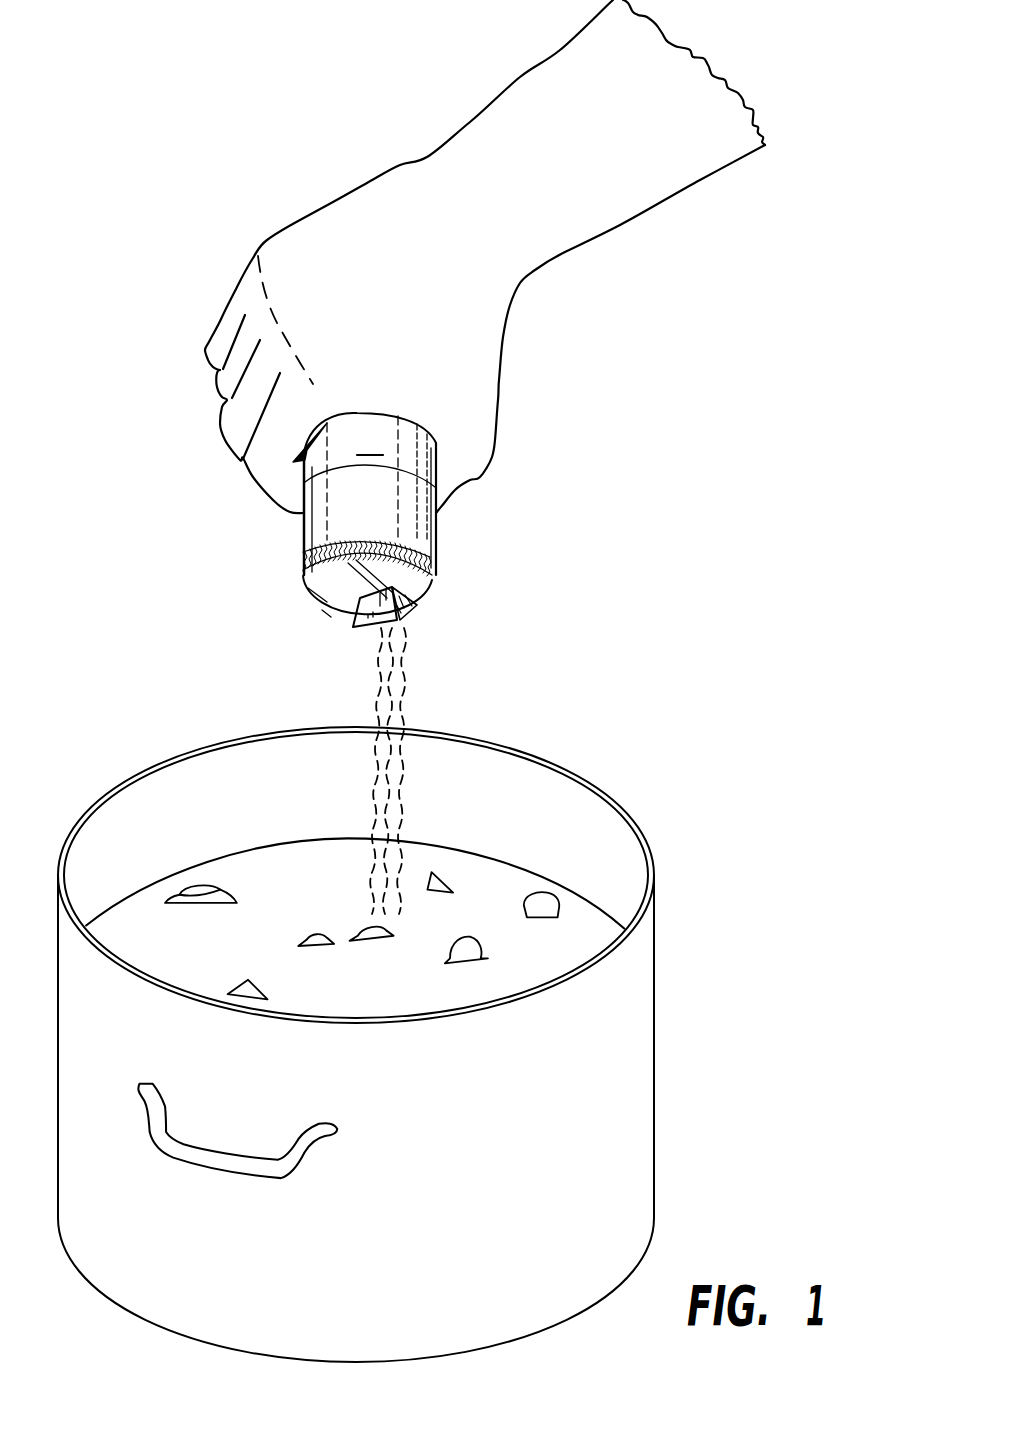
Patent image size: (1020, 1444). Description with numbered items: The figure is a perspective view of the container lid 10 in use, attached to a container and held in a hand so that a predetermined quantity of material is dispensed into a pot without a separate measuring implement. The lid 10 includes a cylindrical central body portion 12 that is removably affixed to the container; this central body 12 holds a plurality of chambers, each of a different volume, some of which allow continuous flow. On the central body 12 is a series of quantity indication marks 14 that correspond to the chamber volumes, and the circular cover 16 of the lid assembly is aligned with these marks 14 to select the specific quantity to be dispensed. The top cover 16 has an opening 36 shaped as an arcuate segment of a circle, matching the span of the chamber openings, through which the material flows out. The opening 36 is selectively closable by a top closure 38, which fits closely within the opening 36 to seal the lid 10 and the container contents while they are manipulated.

The container lid 10 is at (530, 574).
The cylindrical central body portion 12 is at (304, 540).
The quantity indication marks 14 is at (358, 523).
The circular cover 16 is at (323, 610).
The opening 36 is at (405, 605).
The top closure 38 is at (377, 628).